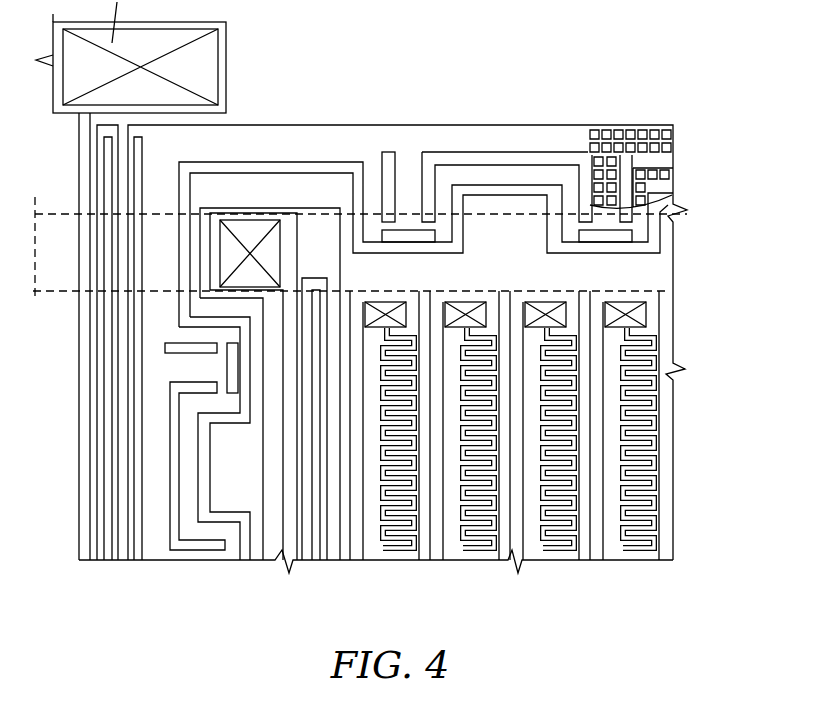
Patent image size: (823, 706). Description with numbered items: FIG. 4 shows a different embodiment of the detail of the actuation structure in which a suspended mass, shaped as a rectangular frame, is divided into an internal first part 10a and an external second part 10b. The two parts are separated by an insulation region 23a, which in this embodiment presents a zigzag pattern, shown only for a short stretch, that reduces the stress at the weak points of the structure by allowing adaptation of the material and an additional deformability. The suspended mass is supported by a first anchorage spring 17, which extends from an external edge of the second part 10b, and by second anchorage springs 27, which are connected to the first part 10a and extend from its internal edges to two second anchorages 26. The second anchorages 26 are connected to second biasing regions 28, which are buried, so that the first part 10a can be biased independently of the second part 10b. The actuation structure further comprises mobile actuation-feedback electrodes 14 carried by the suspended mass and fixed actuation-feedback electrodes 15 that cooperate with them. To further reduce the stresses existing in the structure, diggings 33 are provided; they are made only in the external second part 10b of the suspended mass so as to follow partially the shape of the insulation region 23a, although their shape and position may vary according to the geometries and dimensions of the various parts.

The first part of the suspended mass 10a is at (662, 270).
The second part of the suspended mass 10b is at (565, 133).
The mobile actuation-feedback electrodes 14 is at (678, 482).
The fixed actuation-feedback electrodes 15 is at (452, 535).
The first anchorage spring 17 is at (87, 320).
The insulation region 23a is at (318, 167).
The second anchorages 26 is at (250, 233).
The second anchorage springs 27 is at (322, 538).
The second biasing regions 28 is at (58, 222).
The diggings 33 is at (427, 168).